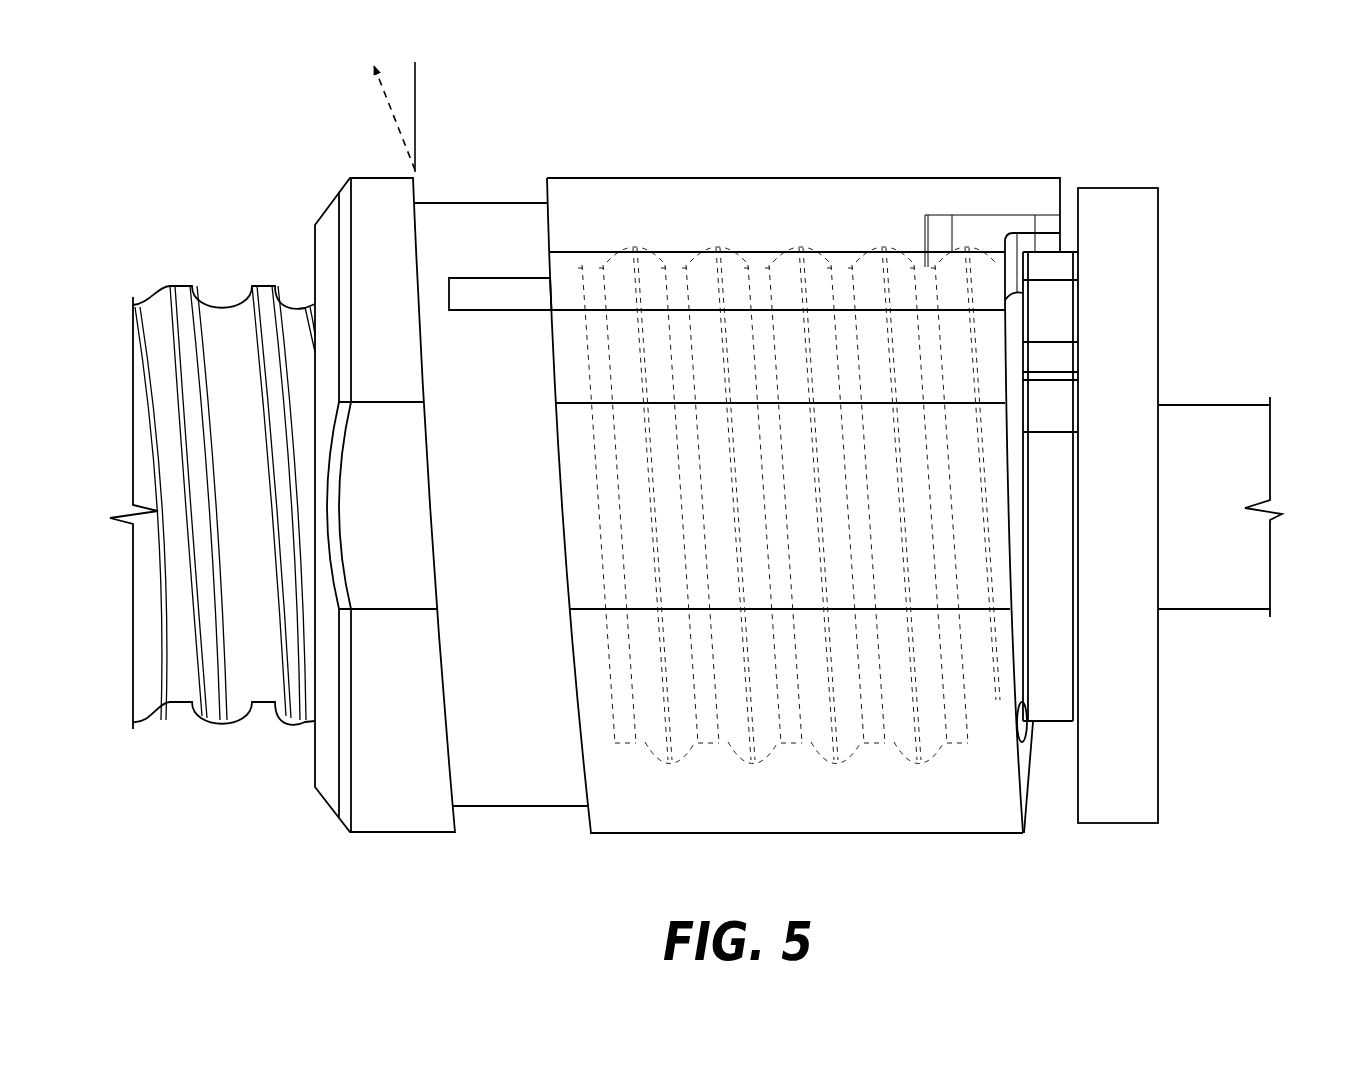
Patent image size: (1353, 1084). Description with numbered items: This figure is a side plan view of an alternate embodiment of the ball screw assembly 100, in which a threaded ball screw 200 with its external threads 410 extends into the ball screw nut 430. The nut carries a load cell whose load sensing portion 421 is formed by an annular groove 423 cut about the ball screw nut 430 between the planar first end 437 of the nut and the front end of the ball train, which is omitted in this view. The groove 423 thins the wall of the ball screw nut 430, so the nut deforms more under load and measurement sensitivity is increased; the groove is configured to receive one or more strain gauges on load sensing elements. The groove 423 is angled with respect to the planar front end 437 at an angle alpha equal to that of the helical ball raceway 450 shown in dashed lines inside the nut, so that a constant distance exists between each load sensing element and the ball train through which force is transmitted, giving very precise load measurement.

The assembly 100 is at (270, 118).
The threaded screw 200 is at (296, 746).
The external threads 410 is at (212, 327).
The load sensing portion 421 is at (478, 186).
The groove 423 is at (458, 824).
The ball screw nut 430 is at (840, 196).
The first end of the nut 437 is at (321, 799).
The helical ball raceway 450 is at (772, 742).